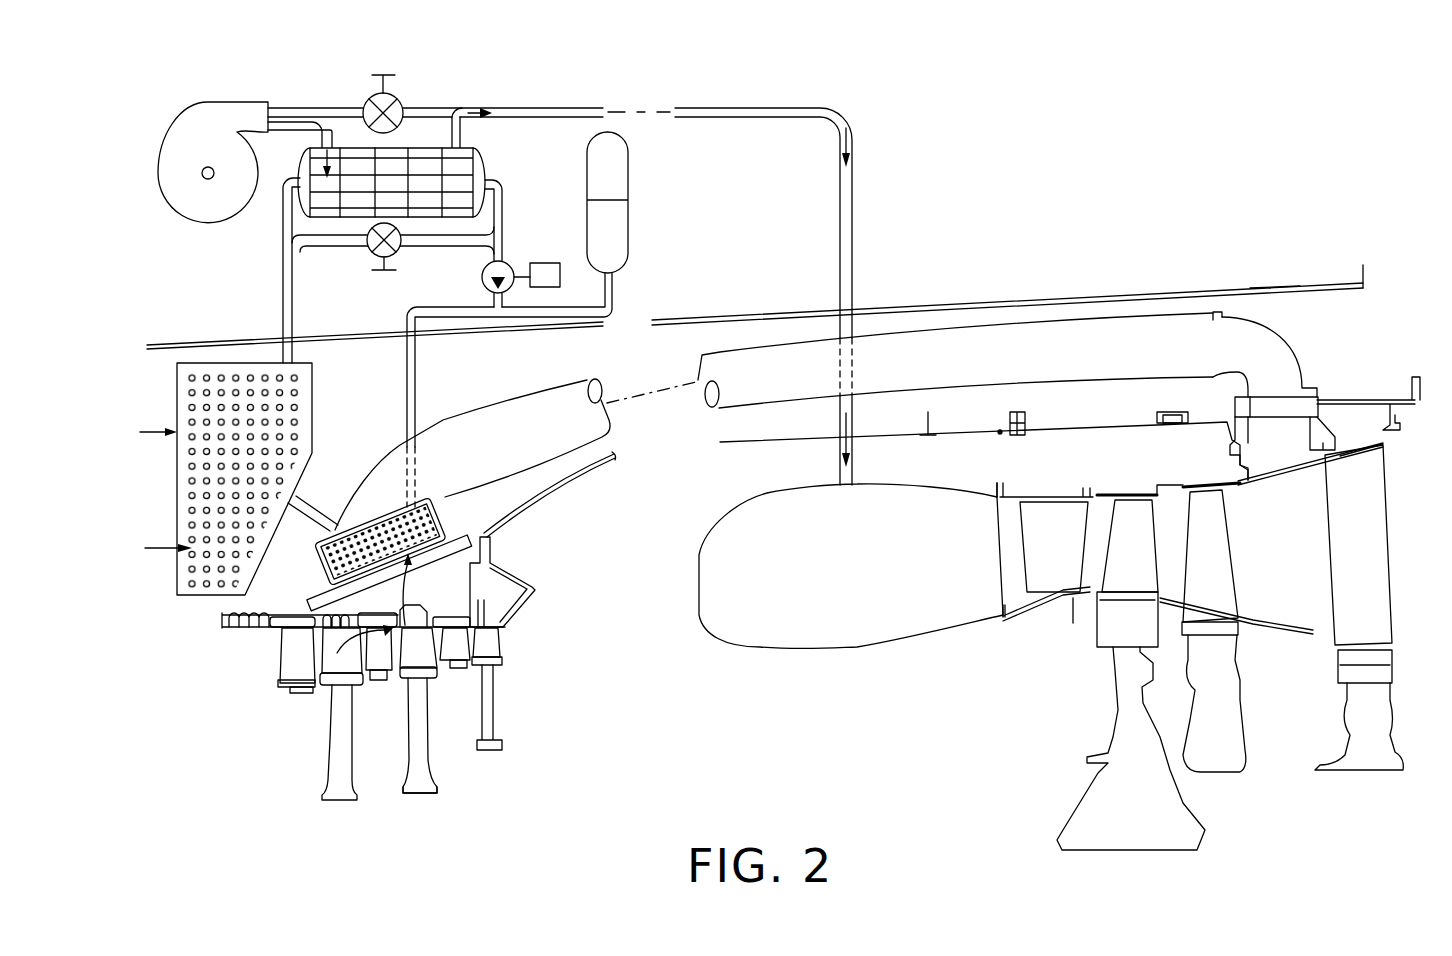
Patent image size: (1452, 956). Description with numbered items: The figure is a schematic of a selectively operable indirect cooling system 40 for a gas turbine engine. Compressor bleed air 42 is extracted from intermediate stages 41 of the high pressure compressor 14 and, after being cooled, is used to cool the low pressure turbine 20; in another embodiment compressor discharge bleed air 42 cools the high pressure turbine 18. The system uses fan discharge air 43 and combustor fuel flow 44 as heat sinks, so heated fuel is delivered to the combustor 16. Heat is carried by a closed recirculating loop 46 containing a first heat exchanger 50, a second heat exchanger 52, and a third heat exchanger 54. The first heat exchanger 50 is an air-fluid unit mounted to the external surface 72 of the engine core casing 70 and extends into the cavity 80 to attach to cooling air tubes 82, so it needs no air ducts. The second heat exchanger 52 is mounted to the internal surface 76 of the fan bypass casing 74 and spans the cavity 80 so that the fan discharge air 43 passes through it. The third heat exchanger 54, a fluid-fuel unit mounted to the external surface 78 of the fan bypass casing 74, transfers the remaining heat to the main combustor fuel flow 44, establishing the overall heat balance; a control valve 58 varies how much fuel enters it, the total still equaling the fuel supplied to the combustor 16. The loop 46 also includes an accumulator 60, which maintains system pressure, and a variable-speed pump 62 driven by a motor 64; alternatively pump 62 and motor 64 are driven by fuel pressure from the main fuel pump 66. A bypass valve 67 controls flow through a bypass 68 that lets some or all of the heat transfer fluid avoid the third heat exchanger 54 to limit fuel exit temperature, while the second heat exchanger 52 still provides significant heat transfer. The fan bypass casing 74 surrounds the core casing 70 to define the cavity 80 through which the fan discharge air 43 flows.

The high pressure compressor 14 is at (431, 803).
The combustor 16 is at (857, 648).
The high pressure turbine 18 is at (1185, 805).
The low pressure turbine 20 is at (1386, 772).
The cooling system 40 is at (156, 665).
The intermediate stages 41 is at (441, 694).
The compressor bleed air 42 is at (432, 592).
The fan discharge air 43 is at (158, 550).
The combustor fuel flow 44 is at (322, 112).
The recirculating loop 46 is at (283, 285).
The first heat exchanger 50 is at (433, 517).
The second heat exchanger 52 is at (312, 405).
The third heat exchanger 54 is at (302, 152).
The control valve 58 is at (397, 75).
The accumulator 60 is at (628, 183).
The pump 62 is at (482, 277).
The motor 64 is at (538, 263).
The main fuel pump 66 is at (197, 102).
The bypass valve 67 is at (392, 272).
The bypass 68 is at (312, 250).
The engine core casing 70 is at (1417, 377).
The external surface 72 is at (1360, 400).
The fan bypass casing 74 is at (1014, 303).
The internal surface 76 is at (1268, 293).
The external surface 78 is at (1254, 283).
The cavity 80 is at (1357, 316).
The cooling air tubes 82 is at (993, 367).